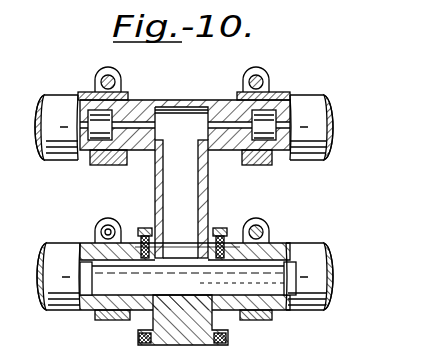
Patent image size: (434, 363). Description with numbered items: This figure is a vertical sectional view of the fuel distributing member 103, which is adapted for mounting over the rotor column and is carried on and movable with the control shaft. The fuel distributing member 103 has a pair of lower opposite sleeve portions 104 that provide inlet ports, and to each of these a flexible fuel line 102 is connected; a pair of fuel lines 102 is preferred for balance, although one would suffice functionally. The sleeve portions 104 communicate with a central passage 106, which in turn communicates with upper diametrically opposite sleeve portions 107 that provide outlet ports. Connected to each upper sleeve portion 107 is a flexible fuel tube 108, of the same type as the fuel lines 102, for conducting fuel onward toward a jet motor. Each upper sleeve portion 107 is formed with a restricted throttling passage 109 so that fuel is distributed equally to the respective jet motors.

The fuel line 102 is at (314, 252).
The fuel distributing member 103 is at (128, 127).
The lower sleeve portion 104 is at (145, 302).
The central passage 106 is at (178, 188).
The upper sleeve portion 107 is at (137, 158).
The flexible fuel tube 108 is at (53, 100).
The restricted throttling passage 109 is at (127, 127).